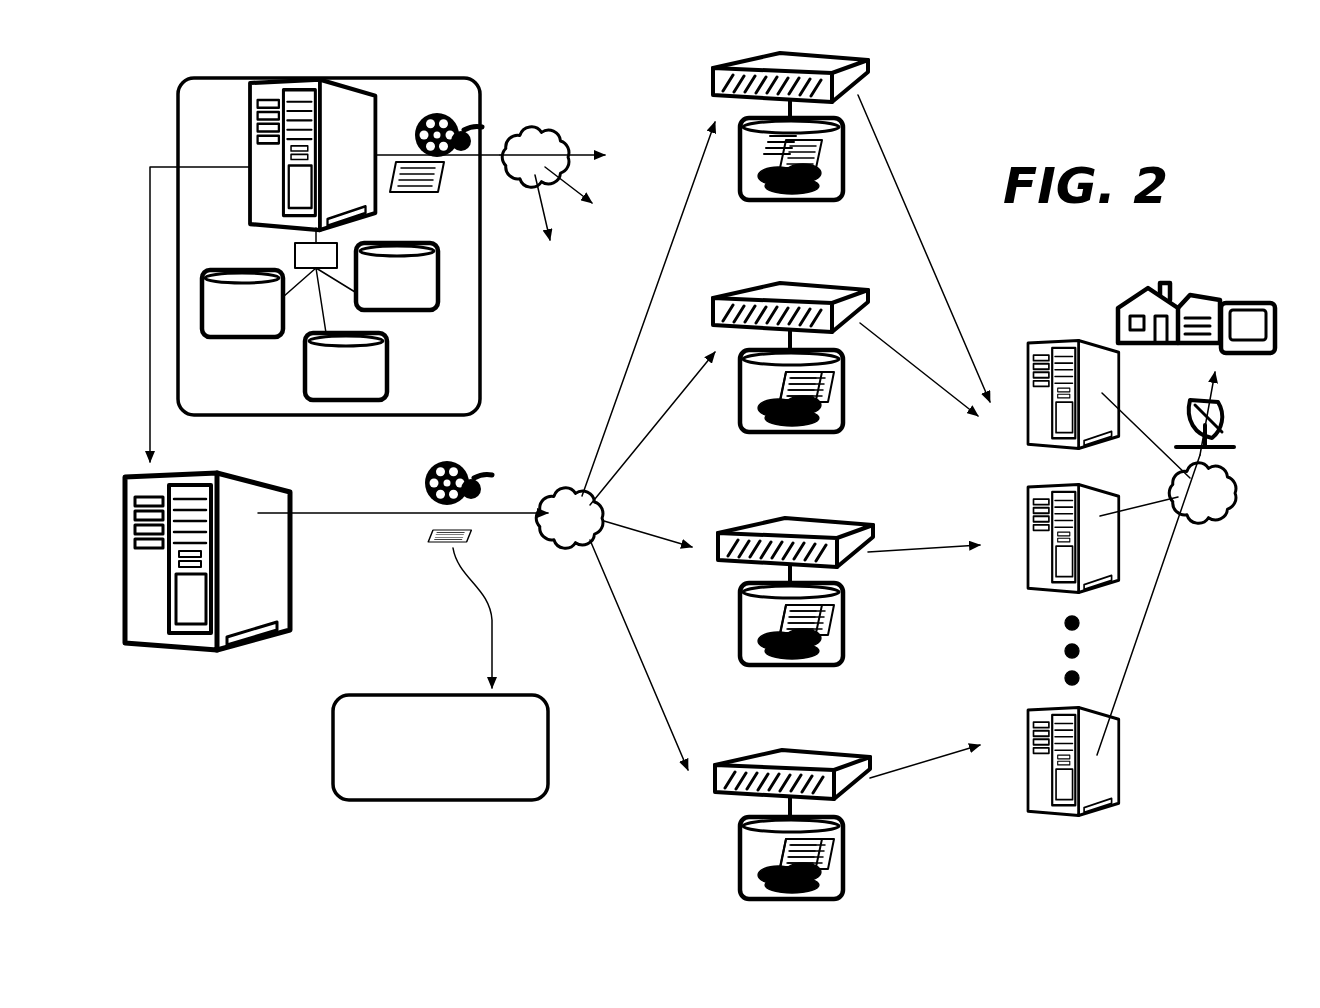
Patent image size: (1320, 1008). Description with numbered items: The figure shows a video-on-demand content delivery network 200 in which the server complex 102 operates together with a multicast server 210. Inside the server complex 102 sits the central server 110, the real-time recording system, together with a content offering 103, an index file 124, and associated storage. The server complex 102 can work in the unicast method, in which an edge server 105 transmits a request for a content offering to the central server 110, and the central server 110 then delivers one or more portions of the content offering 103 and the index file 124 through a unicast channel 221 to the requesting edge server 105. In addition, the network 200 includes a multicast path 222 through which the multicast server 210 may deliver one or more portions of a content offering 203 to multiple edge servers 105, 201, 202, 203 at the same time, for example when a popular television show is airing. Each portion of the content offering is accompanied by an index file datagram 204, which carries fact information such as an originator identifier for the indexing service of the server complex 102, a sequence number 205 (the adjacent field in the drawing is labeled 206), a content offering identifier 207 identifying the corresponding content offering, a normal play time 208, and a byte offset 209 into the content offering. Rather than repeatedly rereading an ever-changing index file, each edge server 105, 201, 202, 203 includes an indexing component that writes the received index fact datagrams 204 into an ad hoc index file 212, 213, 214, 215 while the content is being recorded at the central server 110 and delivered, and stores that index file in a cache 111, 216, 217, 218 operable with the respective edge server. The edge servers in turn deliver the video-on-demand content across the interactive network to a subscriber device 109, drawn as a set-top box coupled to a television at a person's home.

The content delivery network 200 is at (192, 722).
The server complex 102 is at (348, 78).
The central server 110 is at (268, 173).
The content offering 103 is at (428, 120).
The index file 124 is at (337, 304).
The unicast channel 221 is at (585, 133).
The multicast server 210 is at (288, 603).
The content offering 203 is at (486, 484).
The index file datagram 204 is at (442, 548).
The multicast path 222 is at (501, 556).
The sequence number 205 is at (383, 712).
The sequence number field 206 is at (340, 741).
The content offering identifier 207 is at (343, 766).
The normal play time 208 is at (342, 786).
The byte offset 209 is at (542, 741).
The edge server 201 is at (867, 74).
The edge server 202 is at (822, 297).
The edge server 105 is at (823, 763).
The cache 216 is at (758, 201).
The cache 217 is at (758, 434).
The cache 218 is at (758, 667).
The cache 111 is at (742, 850).
The index file 212 is at (800, 138).
The index file 213 is at (824, 374).
The index file 214 is at (828, 608).
The index file 215 is at (843, 848).
The subscriber device 109 is at (1247, 302).